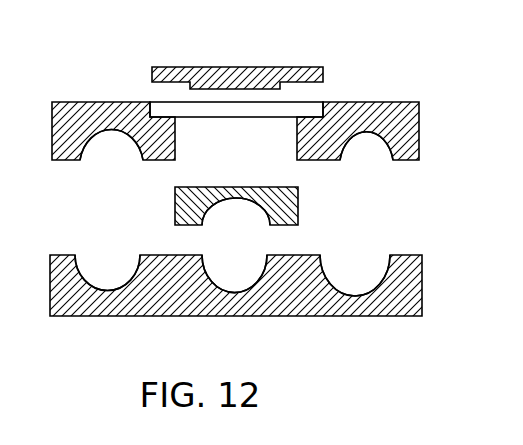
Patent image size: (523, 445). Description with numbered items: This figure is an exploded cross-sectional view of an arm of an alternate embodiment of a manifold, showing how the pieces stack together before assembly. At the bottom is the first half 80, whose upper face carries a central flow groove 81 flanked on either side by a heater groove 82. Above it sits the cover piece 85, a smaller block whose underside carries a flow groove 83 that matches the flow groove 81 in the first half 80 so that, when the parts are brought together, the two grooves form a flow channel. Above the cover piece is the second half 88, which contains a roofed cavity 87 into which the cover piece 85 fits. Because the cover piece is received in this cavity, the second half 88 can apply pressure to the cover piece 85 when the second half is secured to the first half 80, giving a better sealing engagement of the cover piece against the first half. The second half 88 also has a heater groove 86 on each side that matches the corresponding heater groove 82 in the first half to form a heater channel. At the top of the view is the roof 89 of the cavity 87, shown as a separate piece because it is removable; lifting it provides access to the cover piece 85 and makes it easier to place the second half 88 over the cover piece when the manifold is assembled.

The first half 80 is at (410, 302).
The flow groove 81 is at (233, 278).
The heater groove 82 is at (108, 277).
The flow groove 83 is at (232, 208).
The cover piece 85 is at (292, 196).
The heater groove 86 is at (113, 132).
The roofed cavity 87 is at (267, 124).
The second half 88 is at (410, 118).
The roof 89 is at (200, 73).